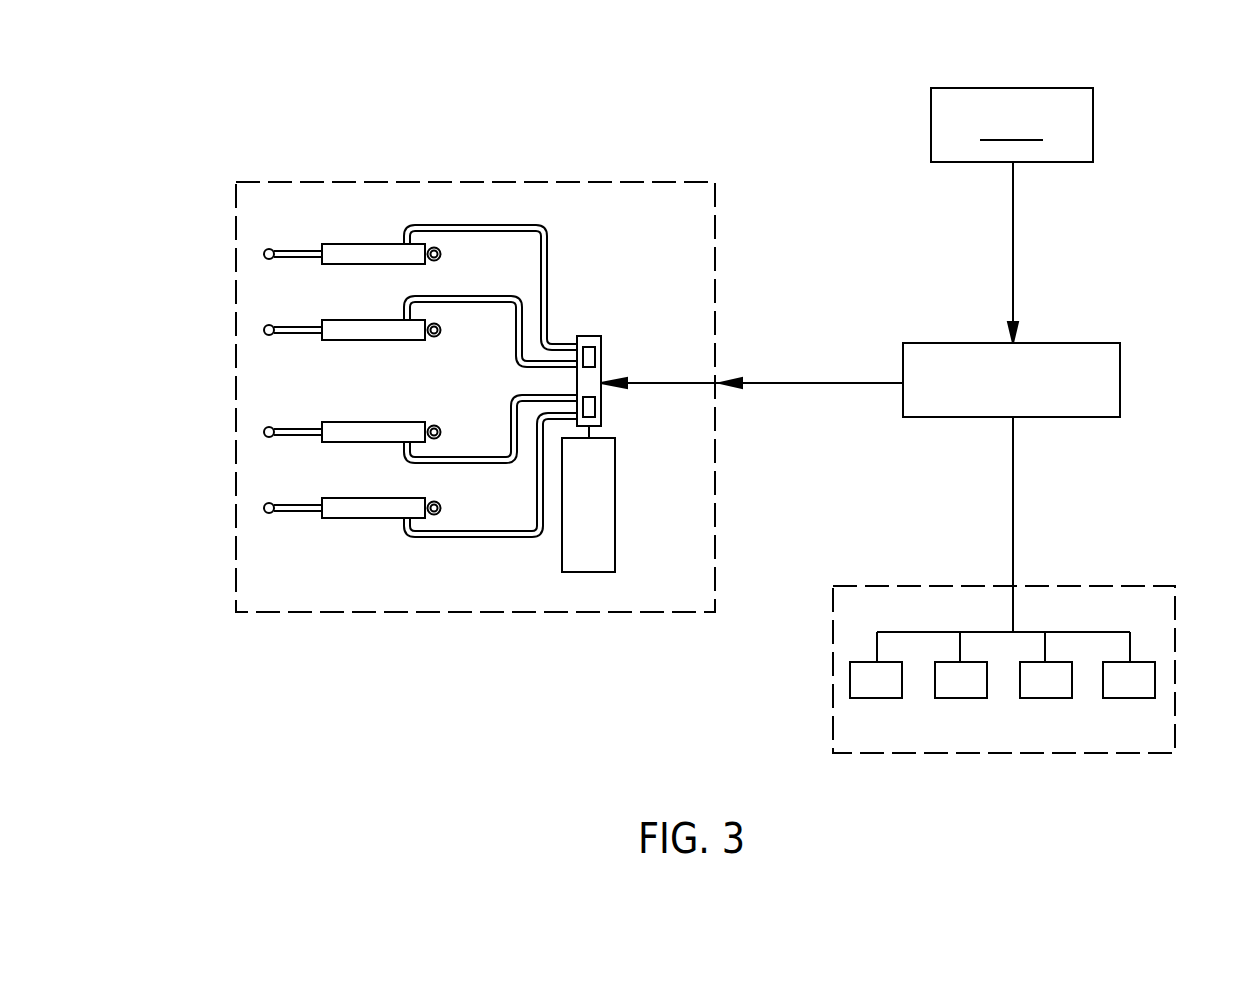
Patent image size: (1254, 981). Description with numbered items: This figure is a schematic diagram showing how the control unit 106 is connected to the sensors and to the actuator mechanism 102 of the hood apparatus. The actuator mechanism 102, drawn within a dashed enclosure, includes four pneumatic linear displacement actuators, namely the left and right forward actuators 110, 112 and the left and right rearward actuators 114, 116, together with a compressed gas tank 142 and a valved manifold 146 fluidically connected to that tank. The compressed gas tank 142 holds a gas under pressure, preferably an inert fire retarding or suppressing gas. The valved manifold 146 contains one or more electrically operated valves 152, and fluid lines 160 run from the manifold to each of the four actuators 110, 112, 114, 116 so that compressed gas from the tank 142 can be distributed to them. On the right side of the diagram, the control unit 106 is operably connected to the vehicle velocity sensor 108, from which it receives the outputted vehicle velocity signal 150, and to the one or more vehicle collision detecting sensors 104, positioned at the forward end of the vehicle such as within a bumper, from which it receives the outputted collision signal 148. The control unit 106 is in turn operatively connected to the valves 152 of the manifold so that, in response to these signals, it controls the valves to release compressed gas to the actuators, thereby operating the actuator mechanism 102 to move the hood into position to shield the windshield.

The actuator mechanism 102 is at (568, 182).
The vehicle collision detecting sensors 104 is at (1130, 698).
The control unit 106 is at (1120, 377).
The vehicle velocity sensor 108 is at (1012, 125).
The left forward actuator 110 is at (368, 244).
The right forward actuator 112 is at (340, 322).
The left rearward actuator 114 is at (325, 422).
The right rearward actuator 116 is at (335, 498).
The compressed gas tank 142 is at (585, 560).
The valved manifold 146 is at (601, 340).
The collision signal 148 is at (1012, 500).
The vehicle velocity signal 150 is at (1013, 245).
The electrically operated valves 152 is at (601, 358).
The fluid lines 160 is at (463, 296).